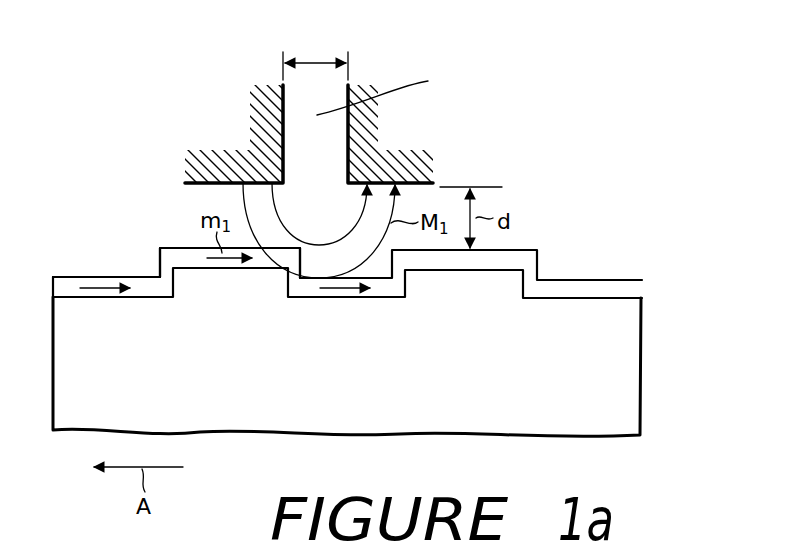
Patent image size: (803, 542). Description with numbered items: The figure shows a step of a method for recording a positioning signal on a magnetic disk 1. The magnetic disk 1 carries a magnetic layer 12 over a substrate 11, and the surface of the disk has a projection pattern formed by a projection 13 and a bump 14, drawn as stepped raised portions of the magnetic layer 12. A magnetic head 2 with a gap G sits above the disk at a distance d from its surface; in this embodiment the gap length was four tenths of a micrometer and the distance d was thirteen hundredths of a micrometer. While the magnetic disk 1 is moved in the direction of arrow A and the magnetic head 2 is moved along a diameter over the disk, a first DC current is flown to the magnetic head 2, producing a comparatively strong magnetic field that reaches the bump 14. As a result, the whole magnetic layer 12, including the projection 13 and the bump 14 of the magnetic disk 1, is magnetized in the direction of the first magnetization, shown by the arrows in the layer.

The magnetic disk 1 is at (558, 238).
The magnetic head 2 is at (410, 133).
The substrate 11 is at (610, 363).
The magnetic layer 12 is at (628, 292).
The projection 13 is at (183, 248).
The bump 14 is at (72, 277).